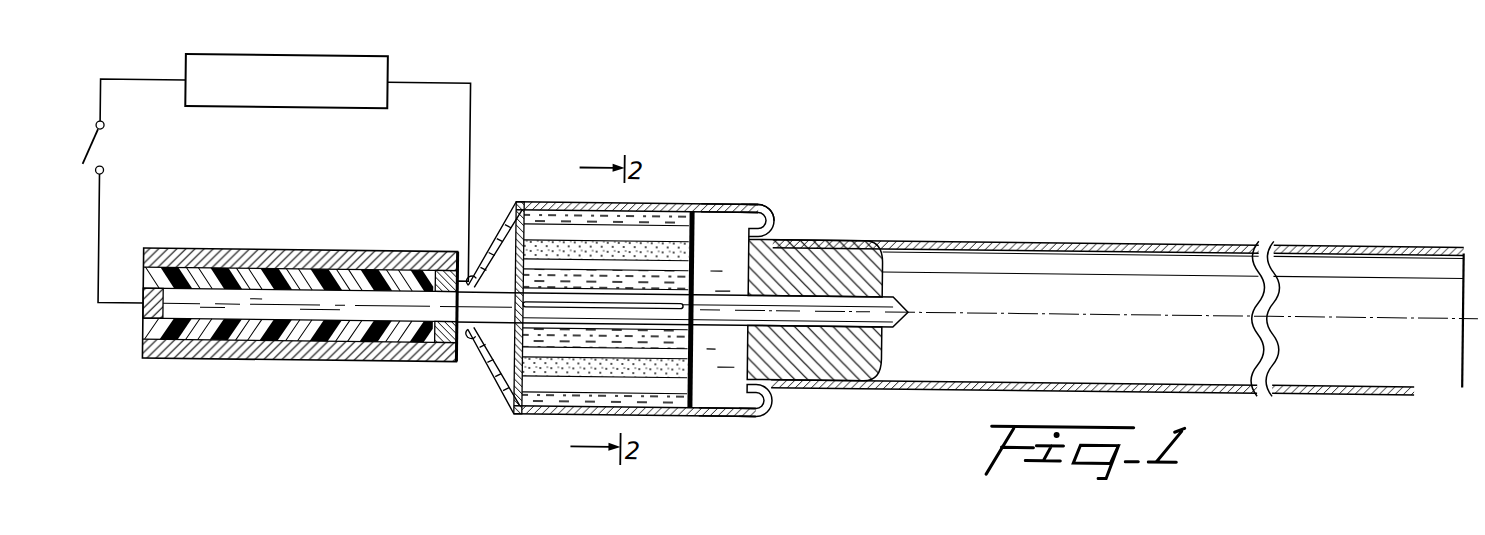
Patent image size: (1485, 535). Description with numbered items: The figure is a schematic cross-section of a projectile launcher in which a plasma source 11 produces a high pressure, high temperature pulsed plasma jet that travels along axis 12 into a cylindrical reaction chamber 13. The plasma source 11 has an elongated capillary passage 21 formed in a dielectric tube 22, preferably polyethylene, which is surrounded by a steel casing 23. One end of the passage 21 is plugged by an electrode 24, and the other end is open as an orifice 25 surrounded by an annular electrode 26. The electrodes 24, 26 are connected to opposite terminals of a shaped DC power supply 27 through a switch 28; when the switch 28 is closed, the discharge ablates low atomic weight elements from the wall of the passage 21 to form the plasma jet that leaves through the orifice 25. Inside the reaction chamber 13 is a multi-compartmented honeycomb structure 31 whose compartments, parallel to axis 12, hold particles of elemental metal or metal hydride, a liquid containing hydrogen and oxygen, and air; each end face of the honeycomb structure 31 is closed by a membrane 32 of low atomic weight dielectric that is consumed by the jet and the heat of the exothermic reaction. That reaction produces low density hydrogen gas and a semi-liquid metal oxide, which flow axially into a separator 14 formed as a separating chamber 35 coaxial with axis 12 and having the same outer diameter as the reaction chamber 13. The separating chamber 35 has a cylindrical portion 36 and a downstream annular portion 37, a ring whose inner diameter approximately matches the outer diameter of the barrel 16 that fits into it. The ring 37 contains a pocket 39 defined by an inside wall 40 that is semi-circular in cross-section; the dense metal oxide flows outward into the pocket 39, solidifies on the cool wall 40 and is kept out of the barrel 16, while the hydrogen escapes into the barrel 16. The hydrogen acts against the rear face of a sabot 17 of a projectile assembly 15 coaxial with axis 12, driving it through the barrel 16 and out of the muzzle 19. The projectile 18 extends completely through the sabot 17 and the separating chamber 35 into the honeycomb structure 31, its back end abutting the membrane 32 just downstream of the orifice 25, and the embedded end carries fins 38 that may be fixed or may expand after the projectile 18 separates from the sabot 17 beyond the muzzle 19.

The plasma source 11 is at (277, 366).
The axis 12 is at (1088, 309).
The reaction chamber 13 is at (700, 311).
The separator 14 is at (736, 425).
The projectile assembly 15 is at (840, 252).
The barrel 16 is at (1201, 239).
The sabot 17 is at (863, 362).
The projectile 18 is at (879, 300).
The muzzle 19 is at (1460, 264).
The capillary passage 21 is at (295, 302).
The dielectric tube 22 is at (195, 276).
The steel casing 23 is at (338, 259).
The electrode 24 is at (142, 313).
The orifice 25 is at (471, 347).
The annular electrode 26 is at (442, 272).
The shaped DC power supply 27 is at (296, 62).
The switch 28 is at (100, 156).
The honeycomb structure 31 is at (669, 205).
The membranes 32 is at (506, 228).
The separating chamber 35 is at (737, 201).
The cylindrical portion 36 is at (725, 389).
The annular portion 37 is at (776, 415).
The fins 38 is at (573, 304).
The pocket 39 is at (754, 228).
The inside wall 40 is at (759, 209).